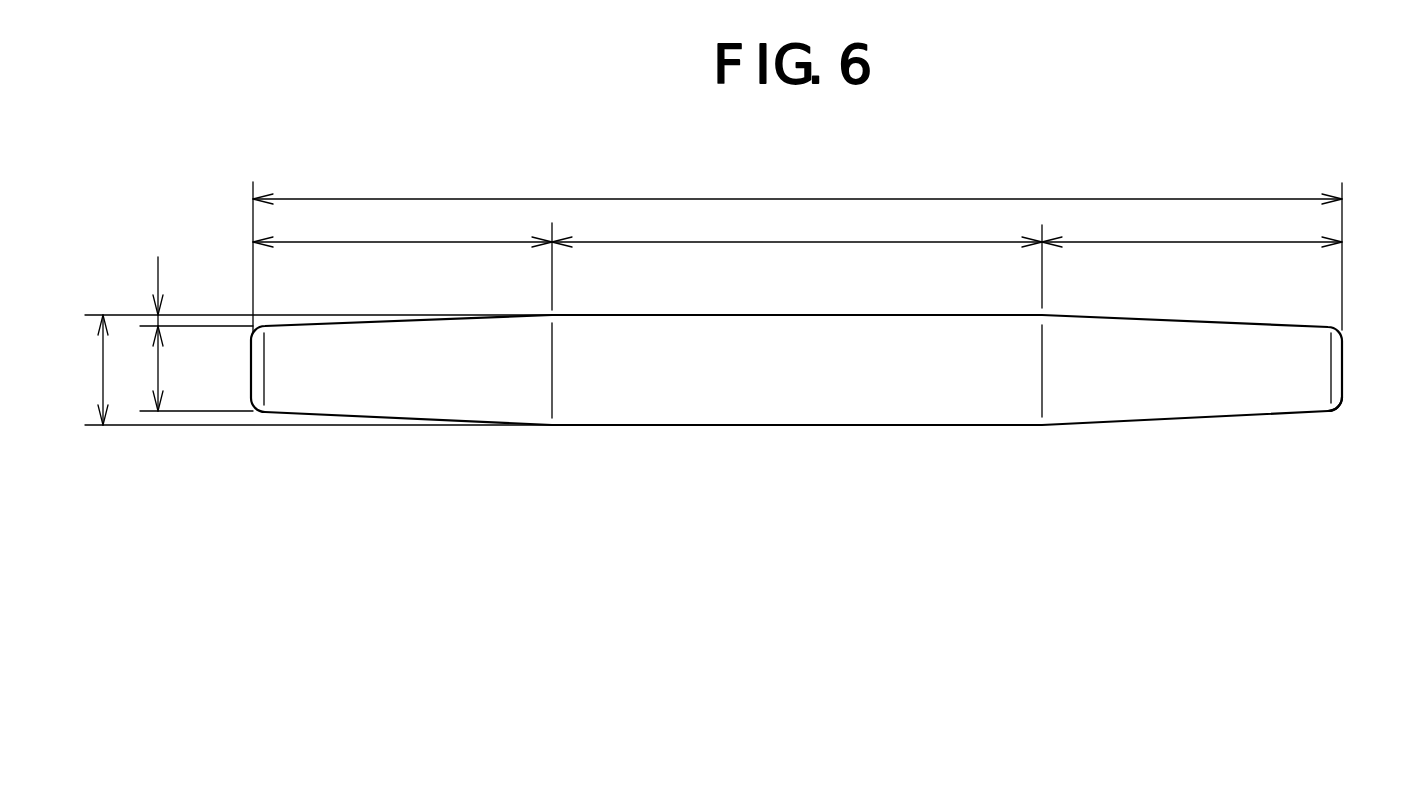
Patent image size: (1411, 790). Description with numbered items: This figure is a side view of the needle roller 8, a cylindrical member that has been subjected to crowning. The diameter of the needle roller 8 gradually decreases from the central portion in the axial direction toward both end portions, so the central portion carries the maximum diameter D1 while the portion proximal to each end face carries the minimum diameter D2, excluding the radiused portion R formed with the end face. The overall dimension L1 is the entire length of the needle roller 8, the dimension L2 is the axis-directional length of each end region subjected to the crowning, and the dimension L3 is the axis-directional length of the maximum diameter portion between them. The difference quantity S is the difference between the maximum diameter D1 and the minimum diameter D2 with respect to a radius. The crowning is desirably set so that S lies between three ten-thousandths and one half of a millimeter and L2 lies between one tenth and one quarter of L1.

The needle roller 8 is at (828, 402).
The entire length L1 is at (797, 185).
The crowning length L2 is at (797, 229).
The maximum diameter portion length L3 is at (797, 229).
The maximum diameter D1 is at (315, 370).
The minimum diameter D2 is at (189, 368).
The difference quantity S is at (144, 291).
The radiused portion R is at (1339, 413).